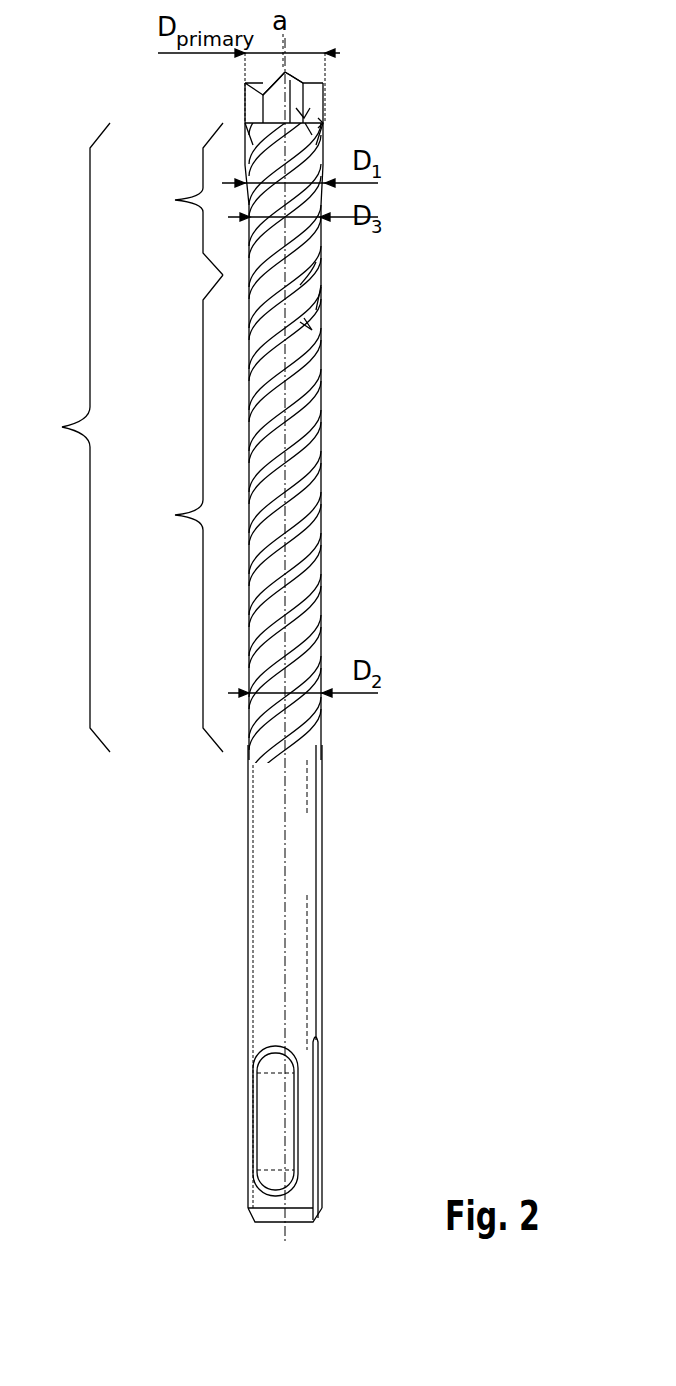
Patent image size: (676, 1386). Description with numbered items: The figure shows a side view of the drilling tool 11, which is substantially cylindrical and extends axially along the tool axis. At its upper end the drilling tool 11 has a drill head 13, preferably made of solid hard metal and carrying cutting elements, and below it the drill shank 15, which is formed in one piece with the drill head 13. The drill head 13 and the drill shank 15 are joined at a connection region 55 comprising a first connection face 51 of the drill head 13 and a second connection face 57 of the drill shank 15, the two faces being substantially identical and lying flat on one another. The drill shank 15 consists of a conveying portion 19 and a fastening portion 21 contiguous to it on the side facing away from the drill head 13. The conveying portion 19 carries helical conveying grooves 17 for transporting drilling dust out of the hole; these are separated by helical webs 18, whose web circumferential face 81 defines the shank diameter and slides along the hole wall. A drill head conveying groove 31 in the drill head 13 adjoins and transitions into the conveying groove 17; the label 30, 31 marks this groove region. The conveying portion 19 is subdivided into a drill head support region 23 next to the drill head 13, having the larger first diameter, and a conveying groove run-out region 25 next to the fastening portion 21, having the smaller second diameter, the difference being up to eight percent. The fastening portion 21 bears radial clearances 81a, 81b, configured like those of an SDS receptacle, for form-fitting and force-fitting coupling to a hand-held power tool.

The drilling tool 11 is at (128, 87).
The drill head 13 is at (336, 79).
The drill shank 15 is at (360, 410).
The conveying groove 17 is at (313, 272).
The web 18 is at (315, 302).
The conveying portion 19 is at (69, 437).
The fastening portion 21 is at (110, 752).
The drill head support region 23 is at (183, 199).
The conveying groove run-out region 25 is at (183, 513).
The main cutting edge 30 is at (305, 100).
The drill head conveying groove 31 is at (294, 77).
The first connection face 51 is at (312, 134).
The connection region 55 is at (336, 123).
The second connection face 57 is at (300, 112).
The web circumferential face 81 is at (306, 326).
The clearance 81a is at (272, 1098).
The clearance 81b is at (315, 1127).